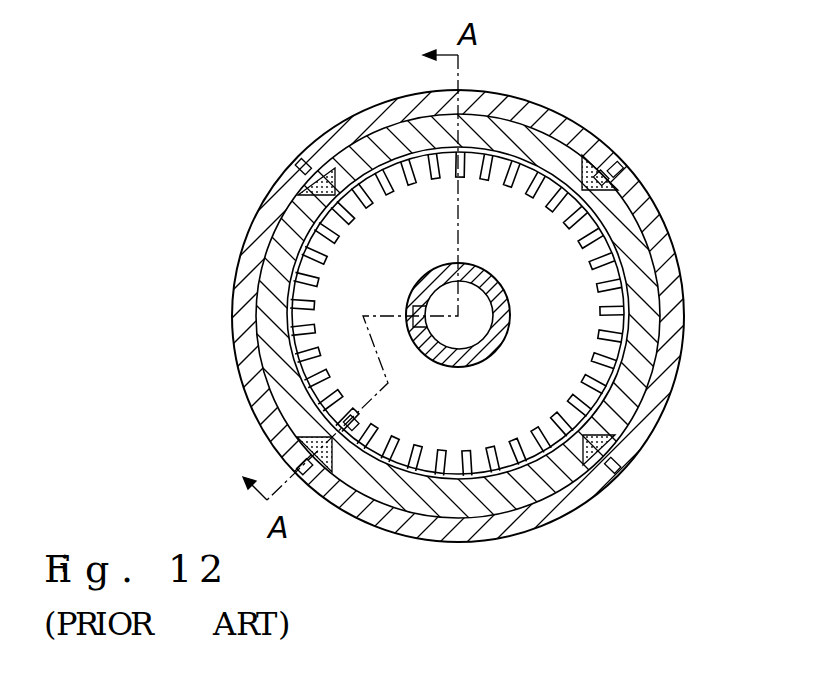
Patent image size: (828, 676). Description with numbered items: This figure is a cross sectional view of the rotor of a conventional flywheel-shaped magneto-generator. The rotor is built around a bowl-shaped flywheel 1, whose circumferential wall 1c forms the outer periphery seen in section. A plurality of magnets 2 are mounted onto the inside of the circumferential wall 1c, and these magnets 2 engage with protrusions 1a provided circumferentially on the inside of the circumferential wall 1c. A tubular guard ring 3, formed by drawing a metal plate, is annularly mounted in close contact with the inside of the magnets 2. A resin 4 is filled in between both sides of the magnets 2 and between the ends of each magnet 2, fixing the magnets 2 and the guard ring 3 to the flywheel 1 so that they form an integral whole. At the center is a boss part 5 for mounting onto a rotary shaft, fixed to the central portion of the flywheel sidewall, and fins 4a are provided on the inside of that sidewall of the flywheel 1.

The flywheel 1 is at (521, 96).
The protrusions 1a is at (317, 178).
The circumferential wall 1c is at (640, 447).
The magnets 2 is at (262, 228).
The guard ring 3 is at (586, 251).
The resin 4 is at (617, 190).
The fins 4a is at (560, 133).
The boss part 5 is at (504, 328).